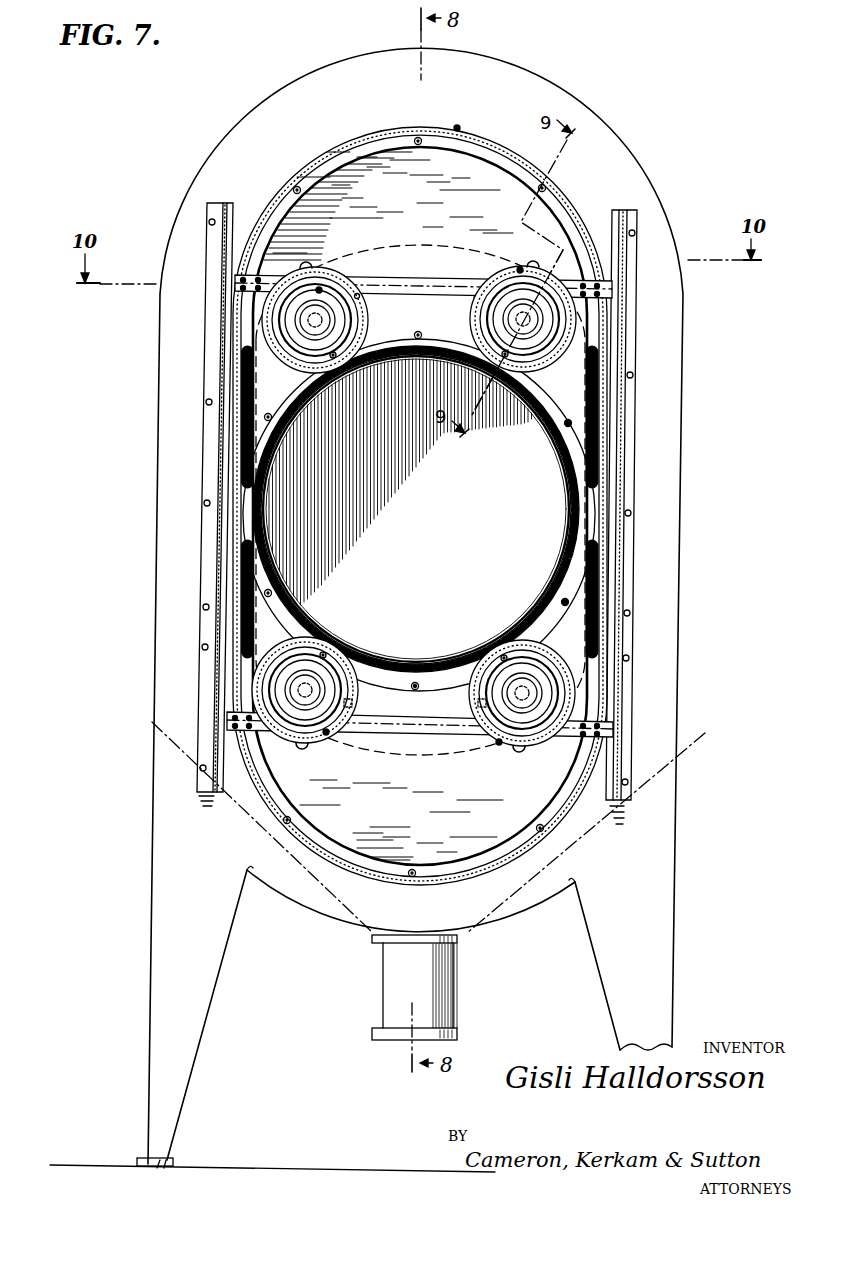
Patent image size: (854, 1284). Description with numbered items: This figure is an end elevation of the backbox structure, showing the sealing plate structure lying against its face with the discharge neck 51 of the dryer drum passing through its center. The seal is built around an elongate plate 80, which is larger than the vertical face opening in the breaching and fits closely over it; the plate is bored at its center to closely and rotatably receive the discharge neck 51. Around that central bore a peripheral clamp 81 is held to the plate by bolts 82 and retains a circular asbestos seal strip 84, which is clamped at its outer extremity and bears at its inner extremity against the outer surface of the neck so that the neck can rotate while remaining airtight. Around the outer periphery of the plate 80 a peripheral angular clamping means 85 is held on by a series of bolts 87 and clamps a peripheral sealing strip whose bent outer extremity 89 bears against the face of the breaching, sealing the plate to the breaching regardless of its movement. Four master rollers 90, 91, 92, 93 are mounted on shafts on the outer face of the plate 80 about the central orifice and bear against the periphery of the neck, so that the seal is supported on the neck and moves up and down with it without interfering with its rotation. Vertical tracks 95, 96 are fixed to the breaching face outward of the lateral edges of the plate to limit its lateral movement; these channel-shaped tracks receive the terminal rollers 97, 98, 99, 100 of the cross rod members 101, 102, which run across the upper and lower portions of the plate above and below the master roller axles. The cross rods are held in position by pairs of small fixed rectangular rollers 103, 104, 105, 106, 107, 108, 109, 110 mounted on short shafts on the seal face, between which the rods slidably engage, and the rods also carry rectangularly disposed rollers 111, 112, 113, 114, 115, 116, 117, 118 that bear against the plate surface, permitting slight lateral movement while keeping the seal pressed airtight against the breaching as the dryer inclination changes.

The discharge neck 51 is at (307, 622).
The elongate plate 80 is at (408, 209).
The peripheral clamp 81 is at (415, 690).
The bolt 82 is at (419, 683).
The circular asbestos seal strip 84 is at (378, 660).
The peripheral angular clamping means 85 is at (489, 161).
The bolt 87 is at (418, 146).
The outer extremity of peripheral sealing strip 89 is at (457, 125).
The master roller 90 is at (296, 270).
The master roller 91 is at (541, 297).
The master roller 92 is at (262, 735).
The master roller 93 is at (543, 745).
The vertical track 95 is at (234, 203).
The vertical track 96 is at (616, 210).
The terminal roller 97 is at (233, 282).
The terminal roller 98 is at (613, 291).
The terminal roller 99 is at (228, 720).
The terminal roller 100 is at (614, 728).
The cross rod member 101 is at (398, 283).
The cross rod member 102 is at (408, 730).
The fixed rectangular roller 103 is at (306, 263).
The fixed rectangular roller 104 is at (279, 332).
The fixed rectangular roller 105 is at (532, 265).
The fixed rectangular roller 106 is at (570, 337).
The fixed rectangular roller 107 is at (249, 688).
The fixed rectangular roller 108 is at (302, 745).
The fixed rectangular roller 109 is at (562, 690).
The fixed rectangular roller 110 is at (518, 748).
The rectangularly disposed roller 111 is at (321, 287).
The rectangularly disposed roller 112 is at (360, 297).
The rectangularly disposed roller 113 is at (517, 268).
The rectangularly disposed roller 114 is at (476, 301).
The rectangularly disposed roller 115 is at (353, 703).
The rectangularly disposed roller 116 is at (328, 735).
The rectangularly disposed roller 117 is at (477, 703).
The rectangularly disposed roller 118 is at (497, 745).